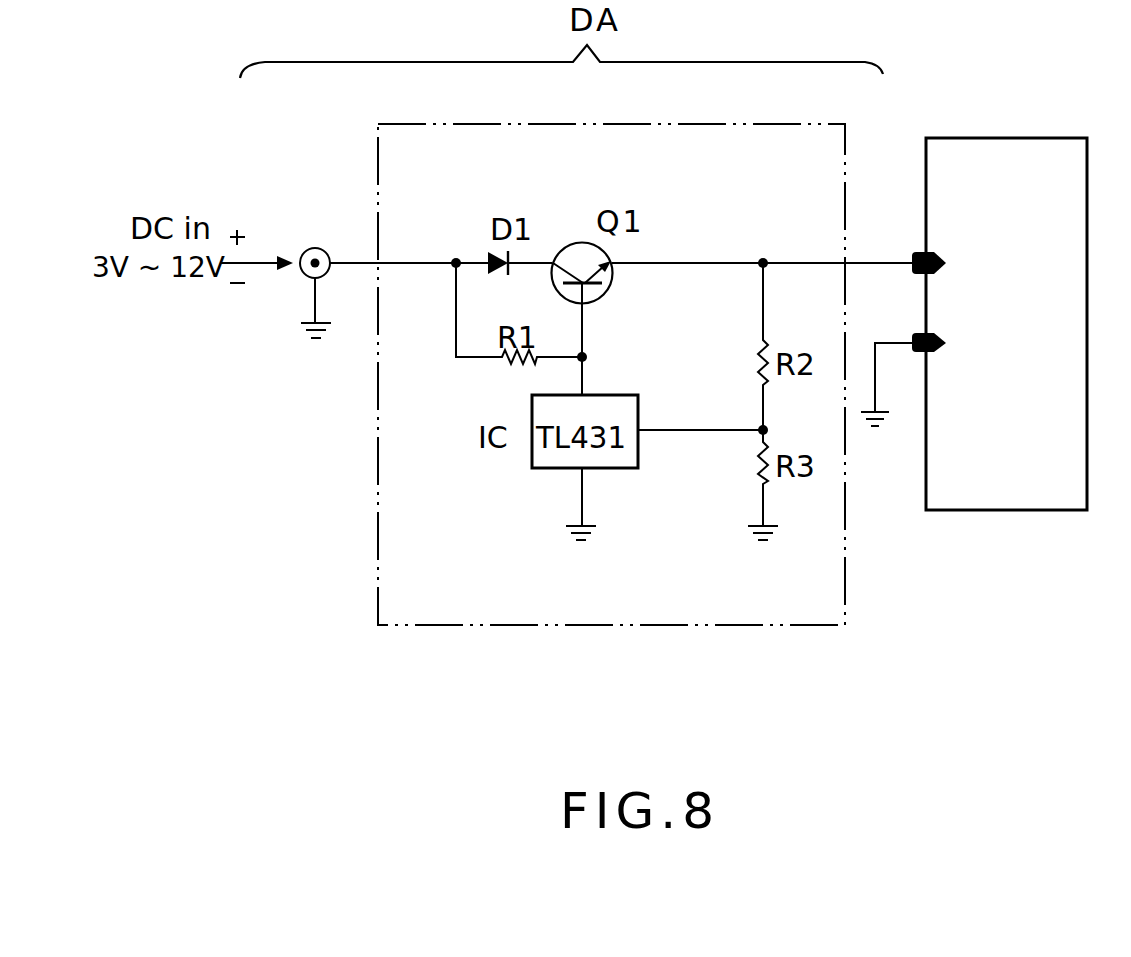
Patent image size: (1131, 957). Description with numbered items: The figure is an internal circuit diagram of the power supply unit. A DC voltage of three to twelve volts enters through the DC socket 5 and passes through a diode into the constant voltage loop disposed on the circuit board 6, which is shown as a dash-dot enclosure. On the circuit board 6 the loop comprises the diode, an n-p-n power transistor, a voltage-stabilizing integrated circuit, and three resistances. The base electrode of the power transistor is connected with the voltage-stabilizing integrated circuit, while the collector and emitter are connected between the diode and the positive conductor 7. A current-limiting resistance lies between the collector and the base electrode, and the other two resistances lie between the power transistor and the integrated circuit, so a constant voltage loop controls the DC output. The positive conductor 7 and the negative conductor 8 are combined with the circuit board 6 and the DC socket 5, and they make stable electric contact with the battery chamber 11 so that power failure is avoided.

The DC socket 5 is at (315, 248).
The circuit board 6 is at (644, 582).
The positive conductor 7 is at (918, 252).
The negative conductor 8 is at (918, 353).
The battery chamber 11 is at (1020, 478).